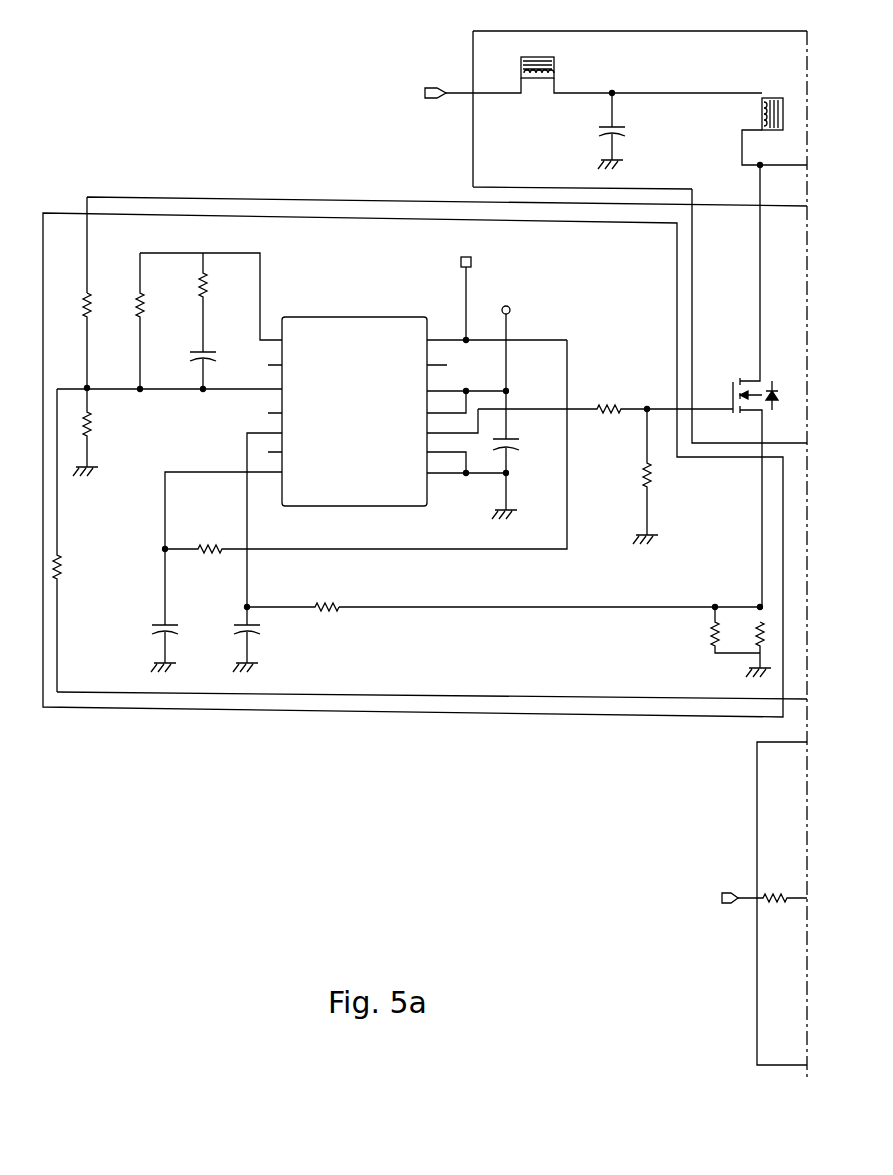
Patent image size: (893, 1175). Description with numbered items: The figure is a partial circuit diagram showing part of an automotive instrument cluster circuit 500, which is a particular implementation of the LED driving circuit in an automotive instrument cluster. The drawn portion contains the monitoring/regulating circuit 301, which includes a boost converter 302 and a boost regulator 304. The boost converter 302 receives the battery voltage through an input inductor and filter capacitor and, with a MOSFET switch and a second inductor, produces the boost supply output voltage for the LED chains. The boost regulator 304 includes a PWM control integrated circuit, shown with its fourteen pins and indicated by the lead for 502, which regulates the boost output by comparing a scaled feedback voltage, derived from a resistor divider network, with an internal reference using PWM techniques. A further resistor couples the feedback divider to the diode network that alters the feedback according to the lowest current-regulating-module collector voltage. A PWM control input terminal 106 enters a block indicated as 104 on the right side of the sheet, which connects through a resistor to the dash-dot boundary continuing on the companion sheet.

The automotive instrument cluster circuit 500 is at (203, 141).
The monitoring/regulating circuit 301 is at (355, 186).
The boost converter 302 is at (473, 160).
The PWM control integrated circuit IC1 502 is at (307, 317).
The boost regulator 304 is at (360, 713).
The controller 104 is at (757, 800).
The PWM control input terminal 106 is at (723, 905).